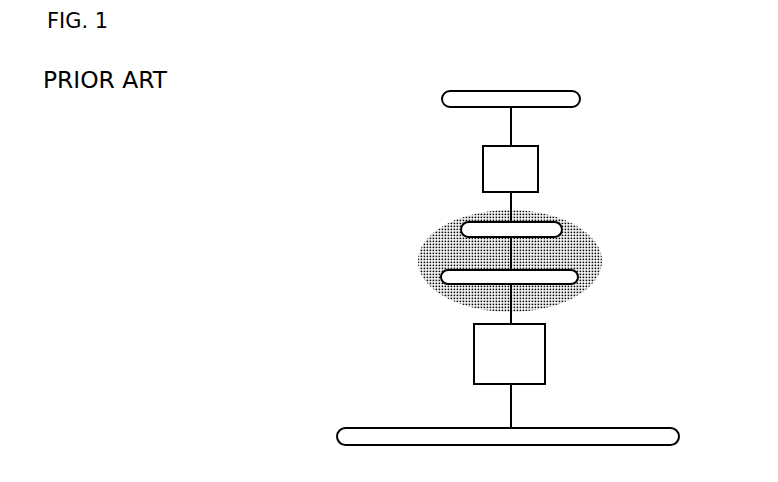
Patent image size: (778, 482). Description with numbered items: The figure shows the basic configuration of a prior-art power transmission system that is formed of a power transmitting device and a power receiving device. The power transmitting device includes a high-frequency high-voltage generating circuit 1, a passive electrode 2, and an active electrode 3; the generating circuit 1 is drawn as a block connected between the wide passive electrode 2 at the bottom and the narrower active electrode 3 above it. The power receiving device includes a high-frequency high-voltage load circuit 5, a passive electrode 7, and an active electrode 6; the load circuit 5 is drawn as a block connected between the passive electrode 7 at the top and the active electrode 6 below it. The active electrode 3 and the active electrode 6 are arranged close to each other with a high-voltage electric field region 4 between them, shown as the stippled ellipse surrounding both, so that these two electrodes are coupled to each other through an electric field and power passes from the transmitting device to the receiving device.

The high-frequency high-voltage generating circuit 1 is at (545, 352).
The passive electrode 2 is at (633, 429).
The active electrode 3 is at (571, 283).
The high-voltage electric field region 4 is at (600, 255).
The high-frequency high-voltage load circuit 5 is at (538, 165).
The active electrode 6 is at (557, 226).
The passive electrode 7 is at (557, 92).